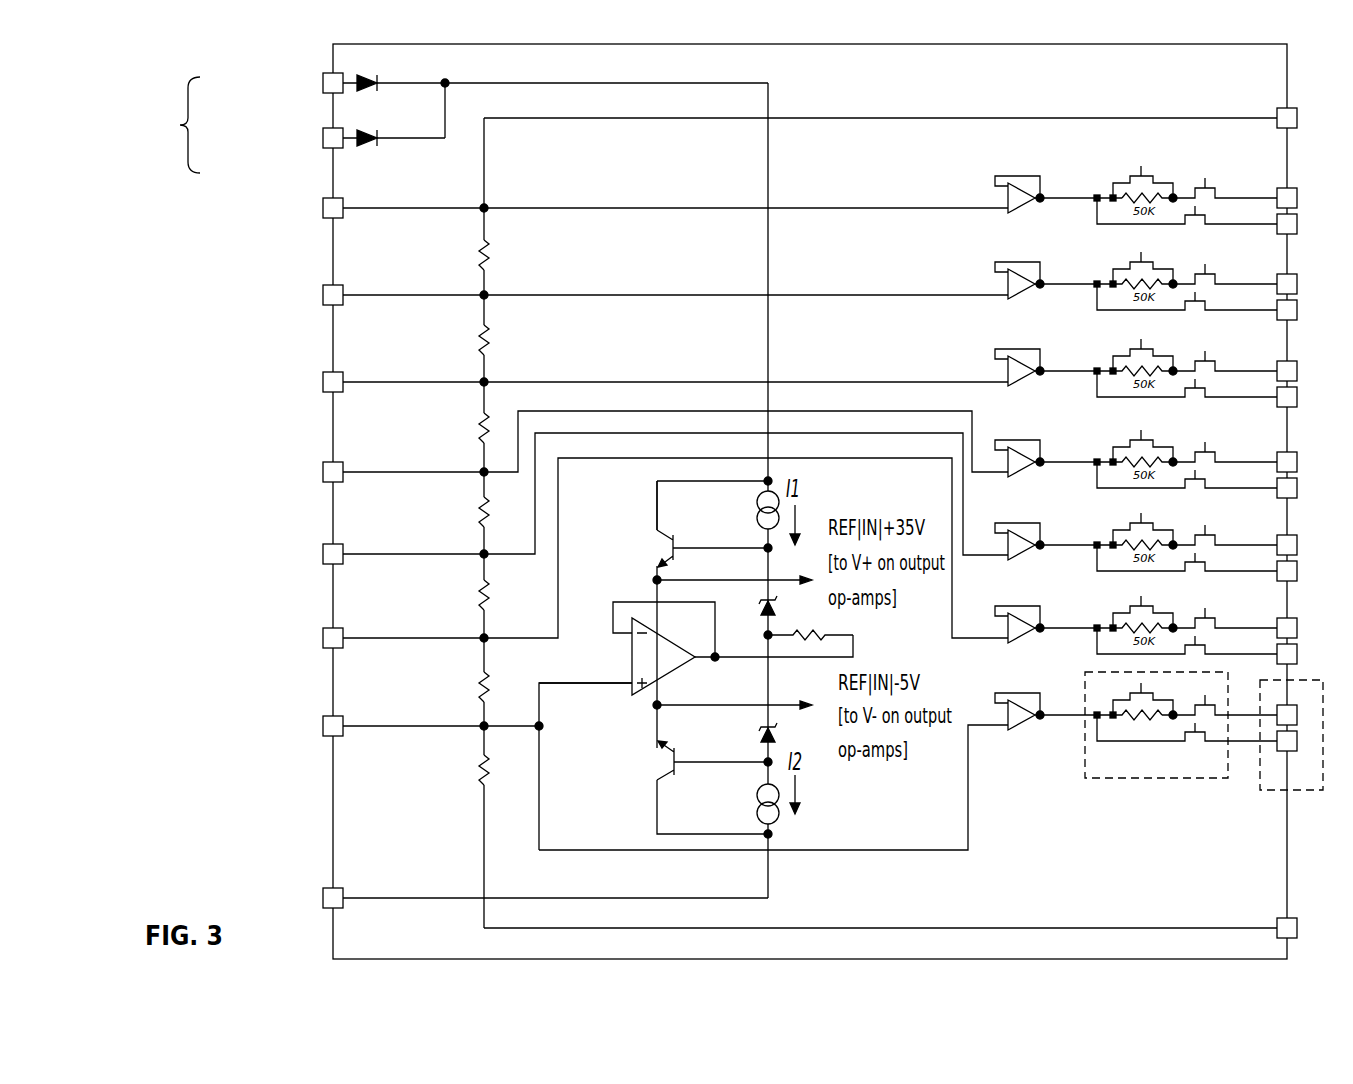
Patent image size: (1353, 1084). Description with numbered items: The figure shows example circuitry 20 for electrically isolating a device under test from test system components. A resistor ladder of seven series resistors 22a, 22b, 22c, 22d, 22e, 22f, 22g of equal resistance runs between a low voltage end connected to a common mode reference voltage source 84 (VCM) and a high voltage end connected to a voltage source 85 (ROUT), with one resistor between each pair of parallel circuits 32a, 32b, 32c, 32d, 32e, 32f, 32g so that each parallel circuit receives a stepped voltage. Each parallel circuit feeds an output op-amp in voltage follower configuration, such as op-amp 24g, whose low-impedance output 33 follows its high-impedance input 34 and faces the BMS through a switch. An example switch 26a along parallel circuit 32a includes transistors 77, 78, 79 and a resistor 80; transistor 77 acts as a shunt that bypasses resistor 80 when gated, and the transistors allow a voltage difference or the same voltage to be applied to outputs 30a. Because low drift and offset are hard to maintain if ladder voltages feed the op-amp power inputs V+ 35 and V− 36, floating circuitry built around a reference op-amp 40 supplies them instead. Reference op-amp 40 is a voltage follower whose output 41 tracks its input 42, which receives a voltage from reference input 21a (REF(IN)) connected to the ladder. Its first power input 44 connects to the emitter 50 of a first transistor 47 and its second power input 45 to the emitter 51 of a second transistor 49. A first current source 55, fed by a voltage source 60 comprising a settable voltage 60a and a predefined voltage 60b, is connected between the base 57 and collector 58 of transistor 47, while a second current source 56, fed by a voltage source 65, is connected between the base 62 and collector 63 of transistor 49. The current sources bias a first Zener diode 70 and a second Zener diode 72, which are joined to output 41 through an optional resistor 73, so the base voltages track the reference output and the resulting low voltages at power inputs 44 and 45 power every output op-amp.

The example circuitry 20 is at (110, 118).
The voltage source 60 is at (175, 125).
The settable voltage 60a is at (267, 86).
The predefined voltage 60b is at (267, 138).
The resistor 22a is at (460, 769).
The resistor 22b is at (460, 676).
The resistor 22c is at (460, 594).
The resistor 22d is at (460, 509).
The resistor 22e is at (460, 424).
The resistor 22f is at (460, 336).
The resistor 22g is at (460, 257).
The parallel circuit 32a is at (608, 848).
The parallel circuit 32b is at (560, 475).
The parallel circuit 32c is at (630, 432).
The parallel circuit 32d is at (697, 410).
The parallel circuit 32e is at (545, 381).
The parallel circuit 32f is at (690, 294).
The parallel circuit 32g is at (690, 207).
The reference input 21a is at (325, 720).
The voltage source 65 is at (268, 895).
The output op-amp 24g is at (997, 182).
The output 33 is at (1067, 196).
The input 34 is at (918, 212).
The positive power input 35 is at (1022, 140).
The negative power input 36 is at (1010, 237).
The reference op-amp 40 is at (632, 690).
The output 41 is at (857, 645).
The input 42 is at (575, 683).
The first power input 44 is at (655, 581).
The second power input 45 is at (654, 707).
The first transistor 47 is at (668, 546).
The second transistor 49 is at (668, 758).
The emitter 50 is at (658, 562).
The emitter 51 is at (667, 747).
The first current source 55 is at (808, 494).
The second current source 56 is at (803, 804).
The base 57 is at (675, 547).
The collector 58 is at (663, 536).
The base 62 is at (736, 764).
The collector 63 is at (663, 775).
The first Zener diode 70 is at (776, 597).
The second Zener diode 72 is at (773, 730).
The resistor 73 is at (800, 631).
The transistor 77 is at (1172, 719).
The transistor 78 is at (1197, 740).
The transistor 79 is at (1222, 723).
The resistor 80 is at (1137, 714).
The switch 26a is at (1093, 783).
The outputs 30a is at (1295, 791).
The reference voltage source 84 is at (1297, 925).
The voltage source 85 is at (1297, 118).